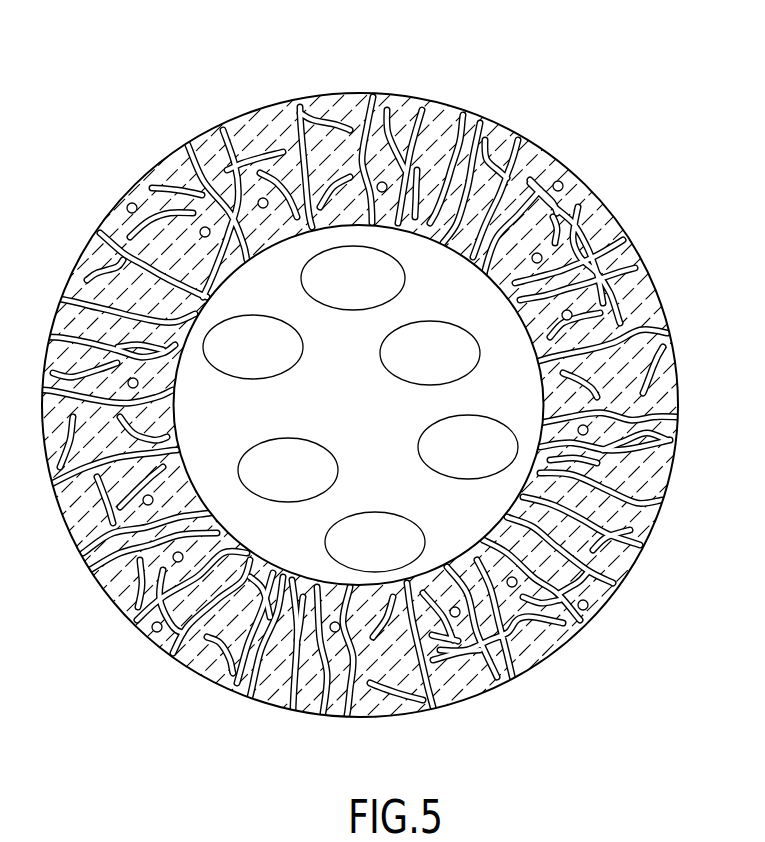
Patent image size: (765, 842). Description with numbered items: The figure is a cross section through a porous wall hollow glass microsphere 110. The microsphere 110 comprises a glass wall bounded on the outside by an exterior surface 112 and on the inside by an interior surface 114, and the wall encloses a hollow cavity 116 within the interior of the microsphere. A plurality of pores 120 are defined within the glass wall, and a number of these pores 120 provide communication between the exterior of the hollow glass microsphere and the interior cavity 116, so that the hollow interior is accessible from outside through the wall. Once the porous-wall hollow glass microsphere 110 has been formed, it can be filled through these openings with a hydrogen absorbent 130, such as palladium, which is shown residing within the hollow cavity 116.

The porous wall hollow glass microsphere 110 is at (382, 369).
The exterior surface 112 is at (382, 401).
The interior surface 114 is at (470, 529).
The hollow cavity 116 is at (359, 405).
The pores 120 is at (282, 133).
The hydrogen absorbent 130 is at (447, 368).